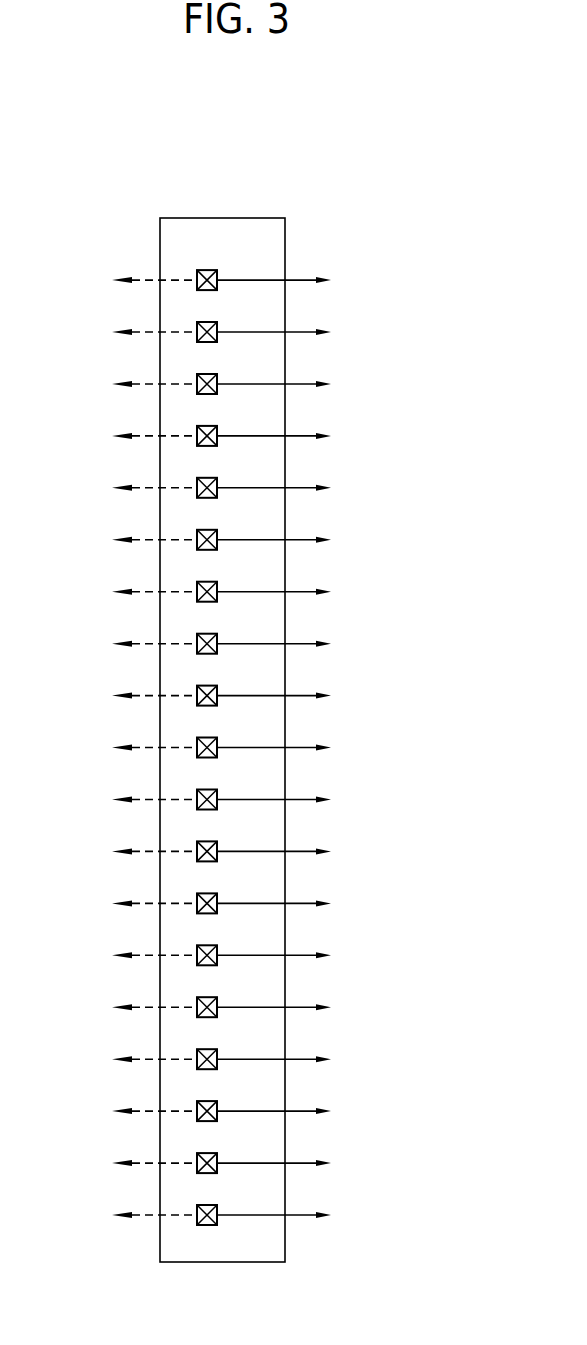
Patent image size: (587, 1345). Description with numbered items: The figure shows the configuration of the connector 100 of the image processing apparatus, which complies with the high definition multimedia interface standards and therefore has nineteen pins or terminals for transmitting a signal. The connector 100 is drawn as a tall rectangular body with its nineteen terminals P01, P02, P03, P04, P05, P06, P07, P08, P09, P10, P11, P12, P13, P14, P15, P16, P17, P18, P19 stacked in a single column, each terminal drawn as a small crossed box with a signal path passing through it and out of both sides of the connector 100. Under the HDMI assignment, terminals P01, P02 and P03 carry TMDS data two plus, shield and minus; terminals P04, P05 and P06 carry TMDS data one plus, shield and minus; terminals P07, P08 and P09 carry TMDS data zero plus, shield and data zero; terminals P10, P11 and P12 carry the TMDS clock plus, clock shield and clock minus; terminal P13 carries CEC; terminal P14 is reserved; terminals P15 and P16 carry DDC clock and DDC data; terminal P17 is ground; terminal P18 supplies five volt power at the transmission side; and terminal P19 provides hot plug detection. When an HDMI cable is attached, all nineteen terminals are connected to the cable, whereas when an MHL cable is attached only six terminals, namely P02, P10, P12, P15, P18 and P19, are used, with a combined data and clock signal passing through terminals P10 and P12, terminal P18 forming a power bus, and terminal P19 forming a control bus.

The connector 100 is at (308, 195).
The terminal P01 is at (221, 1204).
The terminal P02 is at (221, 1152).
The terminal P03 is at (221, 1100).
The terminal P04 is at (221, 1048).
The terminal P05 is at (221, 996).
The terminal P06 is at (221, 944).
The terminal P07 is at (221, 892).
The terminal P08 is at (221, 840).
The terminal P09 is at (221, 789).
The terminal P10 is at (221, 737).
The terminal P11 is at (221, 685).
The terminal P12 is at (221, 633).
The terminal P13 is at (221, 581).
The terminal P14 is at (221, 529).
The terminal P15 is at (221, 477).
The terminal P16 is at (221, 425).
The terminal P17 is at (221, 373).
The terminal P18 is at (221, 321).
The terminal P19 is at (221, 269).